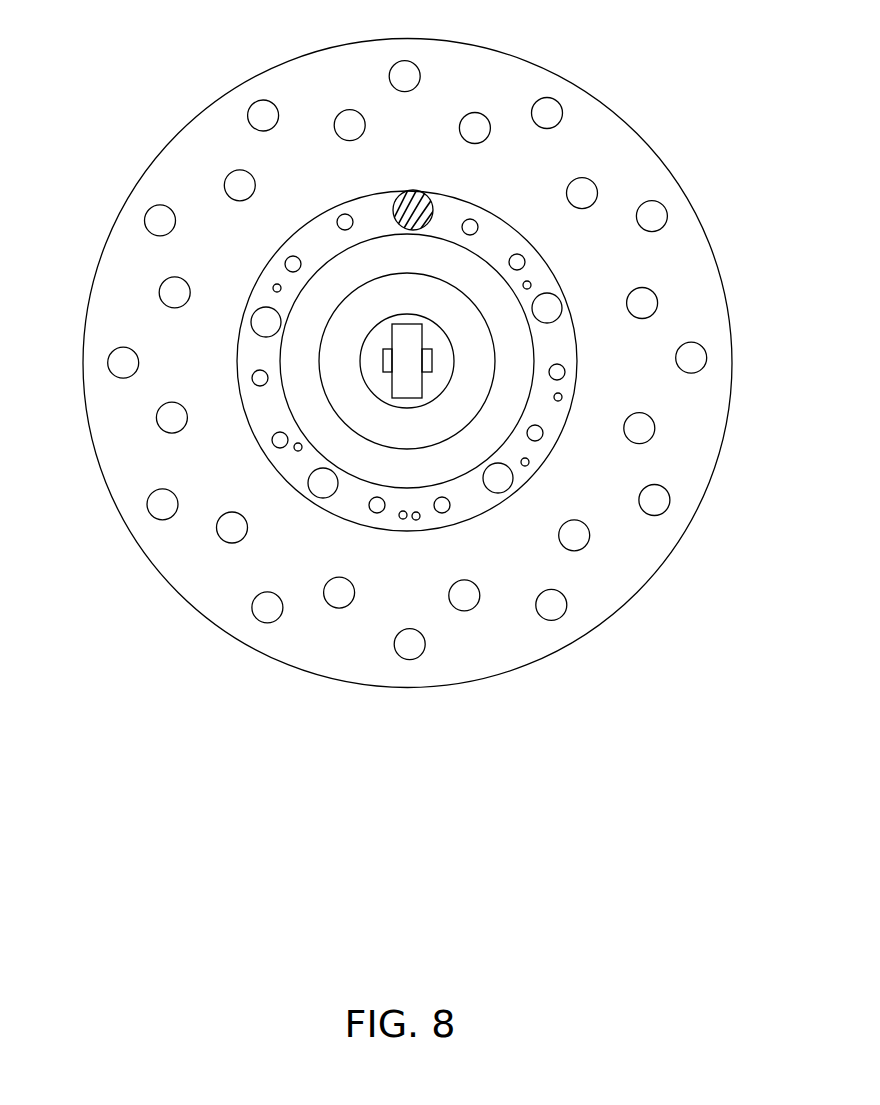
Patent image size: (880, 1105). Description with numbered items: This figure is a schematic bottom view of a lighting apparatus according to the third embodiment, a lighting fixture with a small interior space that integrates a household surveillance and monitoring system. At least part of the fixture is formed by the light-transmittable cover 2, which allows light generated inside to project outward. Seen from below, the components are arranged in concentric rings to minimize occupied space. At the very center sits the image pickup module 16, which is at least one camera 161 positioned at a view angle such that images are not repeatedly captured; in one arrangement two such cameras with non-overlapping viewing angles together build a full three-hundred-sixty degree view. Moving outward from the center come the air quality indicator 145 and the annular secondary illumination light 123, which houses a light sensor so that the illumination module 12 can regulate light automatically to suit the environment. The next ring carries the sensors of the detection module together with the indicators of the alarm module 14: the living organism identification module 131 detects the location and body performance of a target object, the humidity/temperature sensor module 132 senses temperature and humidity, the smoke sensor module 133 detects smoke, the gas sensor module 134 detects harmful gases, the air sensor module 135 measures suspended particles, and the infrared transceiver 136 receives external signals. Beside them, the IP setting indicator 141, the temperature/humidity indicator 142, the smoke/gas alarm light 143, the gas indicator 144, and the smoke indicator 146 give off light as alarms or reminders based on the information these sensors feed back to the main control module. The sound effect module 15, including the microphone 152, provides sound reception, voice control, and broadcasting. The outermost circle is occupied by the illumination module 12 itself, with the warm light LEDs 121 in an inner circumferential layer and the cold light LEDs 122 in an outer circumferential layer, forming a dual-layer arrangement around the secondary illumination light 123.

The cover 2 is at (629, 611).
The illumination module 12 is at (351, 610).
The warm light LED 121 is at (327, 607).
The cold light LED 122 is at (260, 623).
The secondary illumination light 123 is at (423, 470).
The alarm module 14 is at (327, 205).
The living organism identification module 131 is at (430, 193).
The humidity/temperature sensor module 132 is at (255, 307).
The smoke sensor module 133 is at (313, 495).
The gas sensor module 134 is at (508, 492).
The air sensor module 135 is at (562, 305).
The infrared transceiver 136 is at (406, 520).
The sound effect module 15 is at (562, 418).
The IP setting indicator 141 is at (530, 281).
The temperature/humidity indicator 142 is at (529, 466).
The smoke/gas alarm light 143 is at (565, 372).
The gas indicator 144 is at (295, 450).
The air quality indicator 145 is at (337, 343).
The smoke indicator 146 is at (274, 284).
The microphone 152 is at (562, 401).
The image pickup module 16 is at (370, 370).
The camera 161 is at (433, 360).